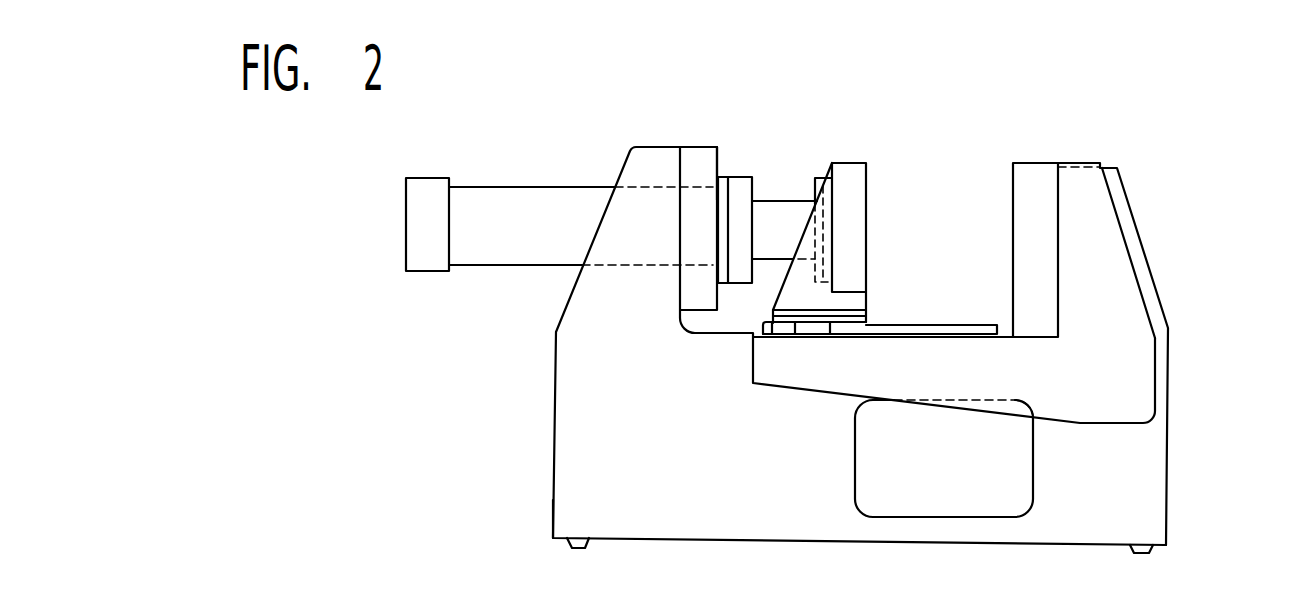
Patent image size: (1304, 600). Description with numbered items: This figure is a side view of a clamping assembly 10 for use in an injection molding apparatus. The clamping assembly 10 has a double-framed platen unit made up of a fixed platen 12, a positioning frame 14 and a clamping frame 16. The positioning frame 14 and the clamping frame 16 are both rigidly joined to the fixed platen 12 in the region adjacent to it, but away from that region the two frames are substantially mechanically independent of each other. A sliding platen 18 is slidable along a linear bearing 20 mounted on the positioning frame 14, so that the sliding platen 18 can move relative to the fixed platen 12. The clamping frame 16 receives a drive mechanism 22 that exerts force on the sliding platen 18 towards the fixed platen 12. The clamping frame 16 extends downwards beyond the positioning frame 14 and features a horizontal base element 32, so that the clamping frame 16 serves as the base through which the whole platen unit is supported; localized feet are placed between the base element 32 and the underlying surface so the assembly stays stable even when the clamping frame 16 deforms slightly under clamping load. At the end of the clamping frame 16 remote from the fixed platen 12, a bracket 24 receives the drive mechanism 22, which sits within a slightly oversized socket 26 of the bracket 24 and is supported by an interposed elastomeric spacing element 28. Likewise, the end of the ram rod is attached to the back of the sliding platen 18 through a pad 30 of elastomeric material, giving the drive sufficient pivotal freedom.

The clamping assembly 10 is at (1138, 158).
The fixed platen 12 is at (1038, 188).
The positioning frame 14 is at (1097, 225).
The clamping frame 16 is at (1123, 452).
The sliding platen 18 is at (845, 186).
The linear bearing 20 is at (932, 327).
The drive mechanism 22 is at (500, 218).
The bracket 24 is at (695, 240).
The socket 26 is at (700, 180).
The elastomeric spacing element 28 is at (722, 202).
The pad 30 is at (826, 190).
The horizontal base element 32 is at (535, 519).